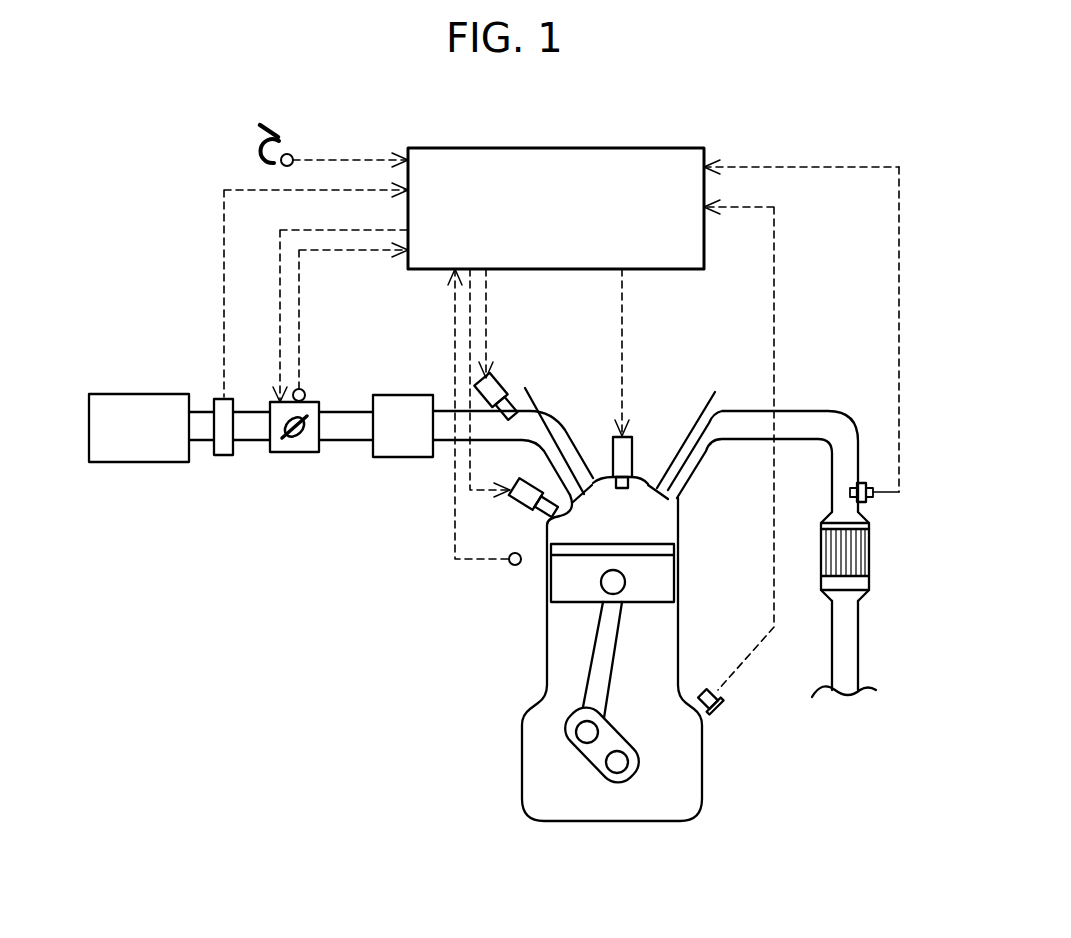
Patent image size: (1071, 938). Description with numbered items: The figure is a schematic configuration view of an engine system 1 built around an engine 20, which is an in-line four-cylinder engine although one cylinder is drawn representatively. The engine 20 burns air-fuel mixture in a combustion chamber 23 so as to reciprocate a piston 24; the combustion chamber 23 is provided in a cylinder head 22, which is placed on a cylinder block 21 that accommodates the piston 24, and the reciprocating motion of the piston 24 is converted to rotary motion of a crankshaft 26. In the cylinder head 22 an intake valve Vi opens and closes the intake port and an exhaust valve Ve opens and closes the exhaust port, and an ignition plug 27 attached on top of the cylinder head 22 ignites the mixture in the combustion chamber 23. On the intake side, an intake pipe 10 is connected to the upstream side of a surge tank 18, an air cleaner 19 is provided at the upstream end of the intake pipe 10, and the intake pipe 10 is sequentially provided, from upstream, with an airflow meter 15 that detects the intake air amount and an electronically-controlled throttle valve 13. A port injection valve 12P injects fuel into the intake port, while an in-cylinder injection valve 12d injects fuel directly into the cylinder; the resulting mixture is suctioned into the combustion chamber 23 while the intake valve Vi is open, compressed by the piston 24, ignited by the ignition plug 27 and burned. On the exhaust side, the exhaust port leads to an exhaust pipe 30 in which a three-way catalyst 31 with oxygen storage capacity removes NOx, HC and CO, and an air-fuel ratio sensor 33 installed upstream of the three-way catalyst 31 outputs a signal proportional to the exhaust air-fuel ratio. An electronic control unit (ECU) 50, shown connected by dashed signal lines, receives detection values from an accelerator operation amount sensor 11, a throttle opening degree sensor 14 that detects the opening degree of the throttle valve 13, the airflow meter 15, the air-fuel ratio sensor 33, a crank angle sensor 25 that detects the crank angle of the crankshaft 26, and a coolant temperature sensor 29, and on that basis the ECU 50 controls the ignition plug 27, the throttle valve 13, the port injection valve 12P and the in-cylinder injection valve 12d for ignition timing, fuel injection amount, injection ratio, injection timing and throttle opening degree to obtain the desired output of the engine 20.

The engine system 1 is at (889, 147).
The intake pipe 10 is at (361, 411).
The accelerator operation amount sensor 11 is at (290, 152).
The port injection valve 12P is at (502, 374).
The in-cylinder injection valve 12d is at (520, 504).
The throttle valve 13 is at (299, 453).
The throttle opening degree sensor 14 is at (304, 389).
The airflow meter 15 is at (222, 457).
The surge tank 18 is at (398, 395).
The air cleaner 19 is at (136, 394).
The engine 20 is at (597, 542).
The cylinder block 21 is at (542, 752).
The cylinder head 22 is at (680, 504).
The combustion chamber 23 is at (667, 534).
The piston 24 is at (664, 592).
The crank angle sensor 25 is at (716, 706).
The crankshaft 26 is at (617, 768).
The ignition plug 27 is at (633, 445).
The coolant temperature sensor 29 is at (515, 566).
The exhaust pipe 30 is at (800, 411).
The three-way catalyst 31 is at (864, 552).
The air-fuel ratio sensor 33 is at (864, 483).
The electronic control unit (ECU) 50 is at (705, 150).
The intake valve Vi is at (533, 387).
The exhaust valve Ve is at (707, 396).